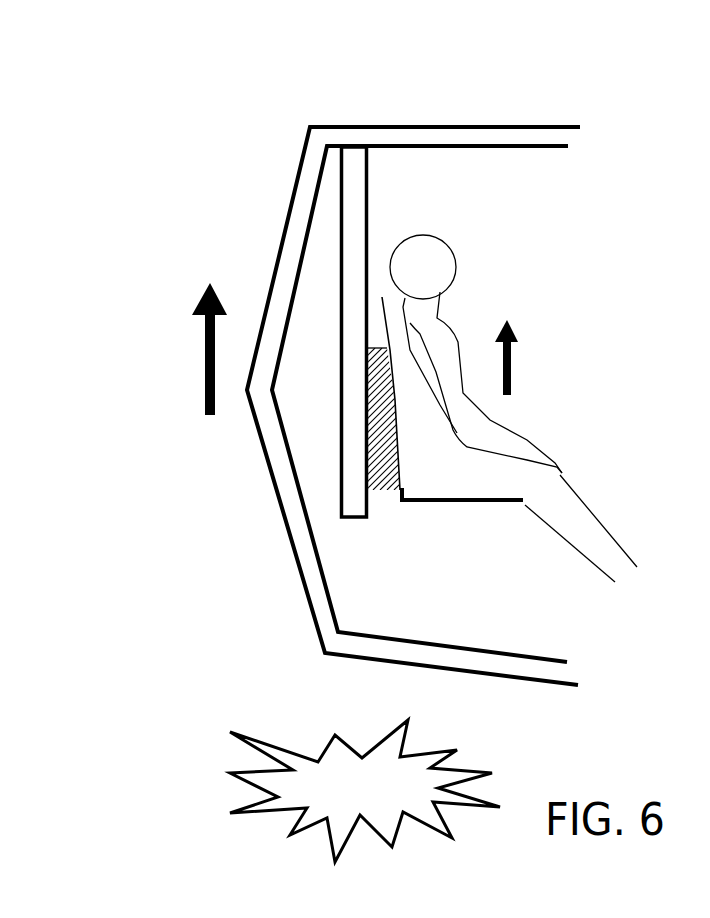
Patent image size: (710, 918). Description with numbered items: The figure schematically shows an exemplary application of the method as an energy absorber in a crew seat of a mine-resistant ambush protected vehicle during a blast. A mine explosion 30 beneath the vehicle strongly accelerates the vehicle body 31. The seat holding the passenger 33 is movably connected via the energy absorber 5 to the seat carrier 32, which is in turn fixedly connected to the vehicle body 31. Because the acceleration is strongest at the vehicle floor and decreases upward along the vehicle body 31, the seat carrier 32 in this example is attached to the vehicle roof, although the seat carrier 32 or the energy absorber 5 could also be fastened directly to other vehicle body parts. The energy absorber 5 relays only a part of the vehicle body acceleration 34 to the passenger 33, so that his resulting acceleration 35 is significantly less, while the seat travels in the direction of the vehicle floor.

The energy absorber 5 is at (370, 433).
The mine explosion 30 is at (320, 785).
The vehicle body 31 is at (463, 135).
The seat carrier 32 is at (360, 200).
The passenger 33 is at (433, 455).
The vehicle body acceleration 34 is at (205, 363).
The resulting acceleration 35 is at (510, 372).